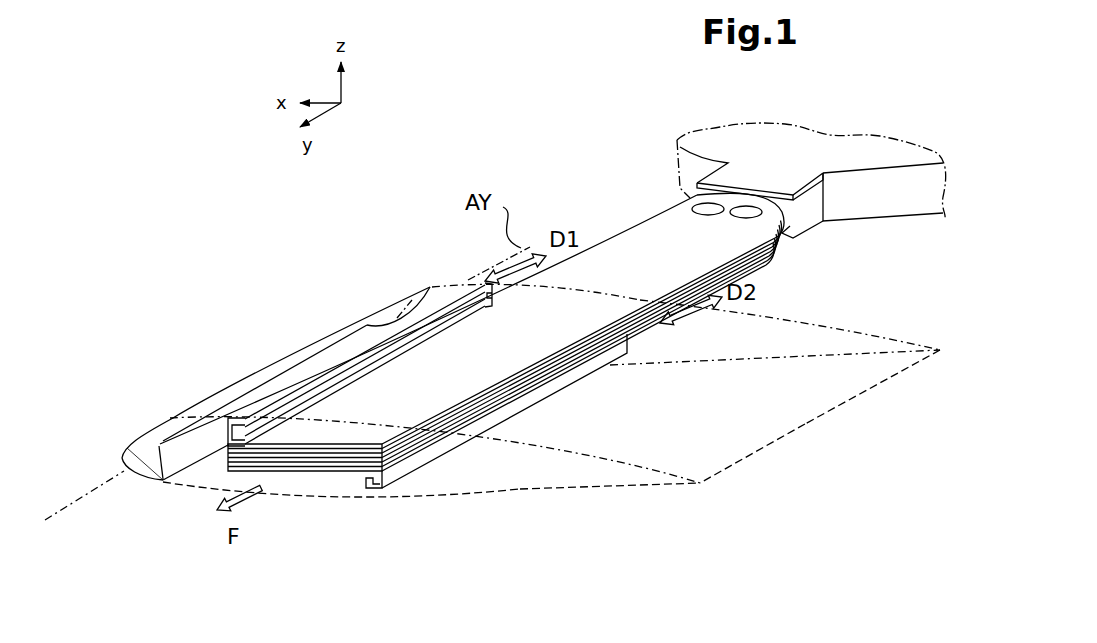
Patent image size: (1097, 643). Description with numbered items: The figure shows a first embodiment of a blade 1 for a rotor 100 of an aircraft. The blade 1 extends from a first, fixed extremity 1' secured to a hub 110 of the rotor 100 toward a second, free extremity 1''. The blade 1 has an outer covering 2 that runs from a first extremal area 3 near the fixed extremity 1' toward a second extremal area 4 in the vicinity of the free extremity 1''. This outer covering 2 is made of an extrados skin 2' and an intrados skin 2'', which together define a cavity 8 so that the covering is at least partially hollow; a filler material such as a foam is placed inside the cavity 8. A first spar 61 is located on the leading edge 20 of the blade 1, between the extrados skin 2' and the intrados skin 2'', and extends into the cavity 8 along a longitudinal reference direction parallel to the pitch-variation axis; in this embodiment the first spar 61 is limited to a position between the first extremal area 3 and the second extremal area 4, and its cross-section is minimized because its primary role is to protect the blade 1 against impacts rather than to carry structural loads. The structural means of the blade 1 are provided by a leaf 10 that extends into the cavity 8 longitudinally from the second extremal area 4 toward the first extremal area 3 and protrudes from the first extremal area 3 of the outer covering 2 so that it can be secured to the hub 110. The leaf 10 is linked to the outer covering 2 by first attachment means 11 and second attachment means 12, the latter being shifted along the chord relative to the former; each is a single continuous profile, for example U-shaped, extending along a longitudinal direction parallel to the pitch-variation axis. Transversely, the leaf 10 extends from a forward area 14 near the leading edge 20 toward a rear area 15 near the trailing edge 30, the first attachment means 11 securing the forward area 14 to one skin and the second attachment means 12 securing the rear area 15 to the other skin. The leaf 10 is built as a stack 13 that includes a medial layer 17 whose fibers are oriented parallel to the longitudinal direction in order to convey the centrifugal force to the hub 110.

The rotor 100 is at (592, 127).
The hub 110 is at (862, 154).
The leaf 10 is at (632, 220).
The blade 1 is at (276, 336).
The first, fixed extremity 1' is at (894, 295).
The second, free extremity 1'' is at (746, 579).
The outer covering 2 is at (503, 260).
The extrados skin 2' is at (790, 303).
The intrados skin 2'' is at (610, 529).
The first extremal area 3 is at (913, 380).
The second extremal area 4 is at (754, 466).
The cavity 8 is at (493, 488).
The first attachment means 11 is at (259, 410).
The second attachment means 12 is at (413, 478).
The stack 13 is at (323, 471).
The forward area 14 is at (283, 372).
The rear area 15 is at (586, 420).
The medial layer 17 is at (230, 447).
The leading edge 20 is at (122, 449).
The trailing edge 30 is at (803, 423).
The first spar 61 is at (150, 474).